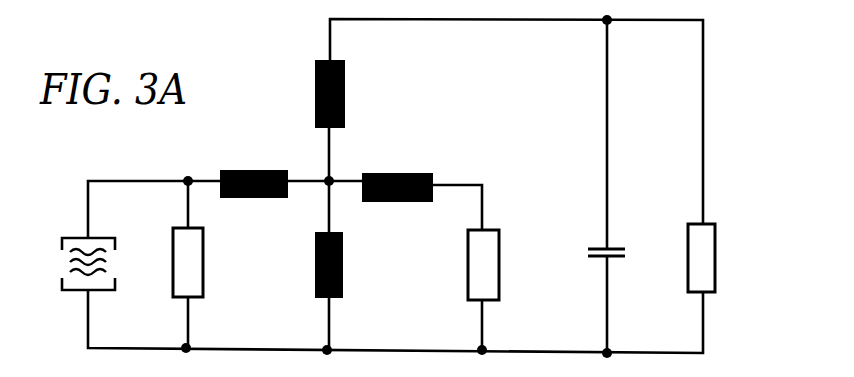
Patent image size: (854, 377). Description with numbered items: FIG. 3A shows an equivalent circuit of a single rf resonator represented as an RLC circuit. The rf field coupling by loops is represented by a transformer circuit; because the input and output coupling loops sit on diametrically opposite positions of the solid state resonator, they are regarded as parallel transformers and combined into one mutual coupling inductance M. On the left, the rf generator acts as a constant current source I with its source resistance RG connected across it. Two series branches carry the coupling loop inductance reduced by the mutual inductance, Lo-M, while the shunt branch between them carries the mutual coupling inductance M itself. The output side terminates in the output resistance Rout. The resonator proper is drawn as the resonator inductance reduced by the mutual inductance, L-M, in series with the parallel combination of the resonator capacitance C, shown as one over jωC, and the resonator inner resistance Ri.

The constant current source I is at (48, 256).
The source resistance of rf generator RG is at (208, 262).
The coupling loop inductance less mutual inductance Lo-M is at (329, 166).
The resonator inductance less mutual inductance L-M is at (387, 94).
The mutual coupling inductance M is at (360, 265).
The output resistance Rout is at (509, 265).
The resonator capacitance C is at (676, 253).
The resonator inner resistance Ri is at (718, 258).